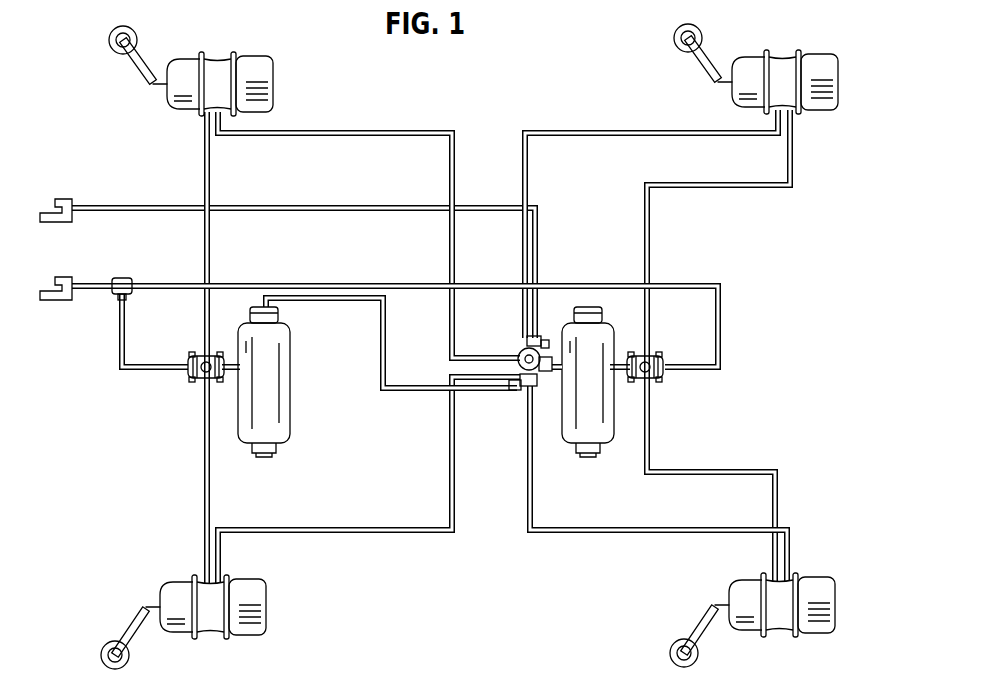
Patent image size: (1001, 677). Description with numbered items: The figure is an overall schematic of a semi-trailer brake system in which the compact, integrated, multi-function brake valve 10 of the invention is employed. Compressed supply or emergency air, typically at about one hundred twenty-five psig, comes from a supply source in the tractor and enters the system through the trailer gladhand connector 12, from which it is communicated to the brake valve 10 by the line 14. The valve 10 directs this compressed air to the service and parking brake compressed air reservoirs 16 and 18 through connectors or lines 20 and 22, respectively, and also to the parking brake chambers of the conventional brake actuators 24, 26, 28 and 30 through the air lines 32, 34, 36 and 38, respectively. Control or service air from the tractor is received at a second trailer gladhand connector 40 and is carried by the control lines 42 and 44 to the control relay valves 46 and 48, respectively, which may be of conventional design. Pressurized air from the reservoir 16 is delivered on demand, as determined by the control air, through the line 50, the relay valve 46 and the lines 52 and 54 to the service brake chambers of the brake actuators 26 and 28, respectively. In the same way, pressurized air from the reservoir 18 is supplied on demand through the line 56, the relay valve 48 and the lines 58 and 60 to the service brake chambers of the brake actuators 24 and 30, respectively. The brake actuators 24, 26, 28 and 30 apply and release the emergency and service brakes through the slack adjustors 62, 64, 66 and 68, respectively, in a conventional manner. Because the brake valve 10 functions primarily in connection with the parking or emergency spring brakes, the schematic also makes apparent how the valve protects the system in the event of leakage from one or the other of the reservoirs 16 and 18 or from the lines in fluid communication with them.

The brake valve 10 is at (507, 398).
The trailer gladhand connector 12 is at (66, 198).
The line 14 is at (337, 202).
The compressed air reservoir 16 is at (600, 397).
The compressed air reservoir 18 is at (278, 402).
The connector or line 20 is at (548, 345).
The connector or line 22 is at (412, 389).
The brake actuator 24 is at (265, 57).
The brake actuator 26 is at (823, 56).
The brake actuator 28 is at (815, 585).
The brake actuator 30 is at (258, 600).
The air line 32 is at (375, 128).
The air line 34 is at (613, 128).
The air line 36 is at (573, 526).
The air line 38 is at (383, 527).
The trailer gladhand connector 40 is at (58, 298).
The control line 42 is at (245, 281).
The control line 44 is at (152, 363).
The control relay valve 46 is at (662, 381).
The control relay valve 48 is at (187, 383).
The line 50 is at (617, 358).
The line 52 is at (645, 239).
The line 54 is at (712, 470).
The line 56 is at (235, 361).
The line 58 is at (205, 238).
The line 60 is at (205, 453).
The slack adjustor 62 is at (140, 62).
The slack adjustor 64 is at (705, 58).
The slack adjustor 66 is at (700, 615).
The slack adjustor 68 is at (133, 620).